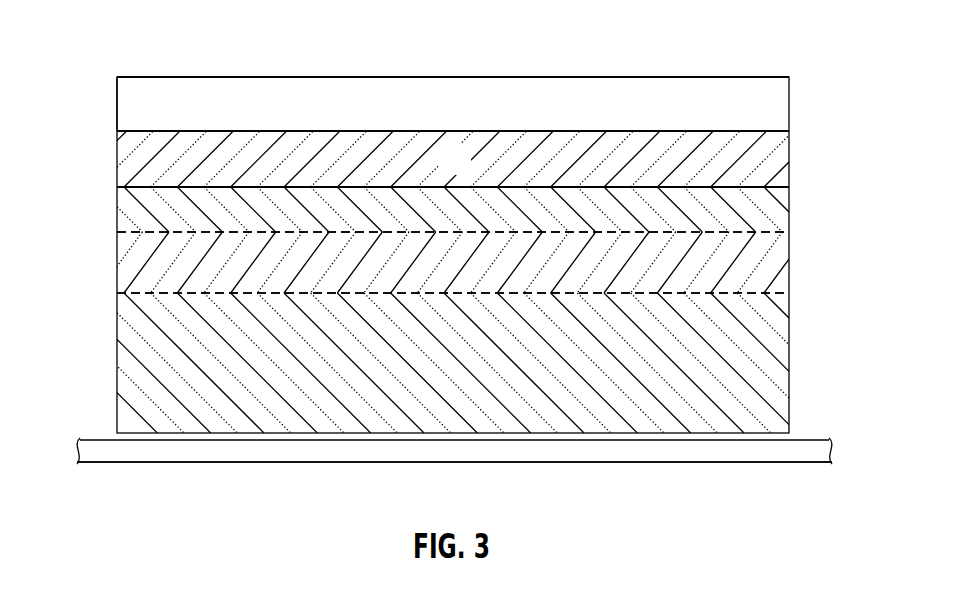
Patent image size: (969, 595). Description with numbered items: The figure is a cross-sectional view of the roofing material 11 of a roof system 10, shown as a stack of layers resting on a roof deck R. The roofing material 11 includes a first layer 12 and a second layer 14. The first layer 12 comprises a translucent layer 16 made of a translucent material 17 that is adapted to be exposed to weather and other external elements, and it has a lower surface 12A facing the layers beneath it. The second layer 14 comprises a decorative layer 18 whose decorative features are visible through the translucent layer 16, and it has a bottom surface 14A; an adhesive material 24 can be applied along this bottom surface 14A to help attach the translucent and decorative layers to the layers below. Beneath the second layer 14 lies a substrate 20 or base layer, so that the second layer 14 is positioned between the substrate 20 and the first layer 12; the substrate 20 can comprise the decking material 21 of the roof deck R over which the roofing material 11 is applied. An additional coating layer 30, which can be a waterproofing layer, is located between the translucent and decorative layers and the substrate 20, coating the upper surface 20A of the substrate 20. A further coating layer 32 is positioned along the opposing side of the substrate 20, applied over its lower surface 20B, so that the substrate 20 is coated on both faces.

The roof system 10 is at (138, 43).
The roofing material 11 is at (511, 70).
The first layer 12 is at (750, 97).
The lower surface of the first layer 12A is at (769, 125).
The second layer 14 is at (112, 165).
The bottom surface of the decorative layer 14A is at (235, 178).
The translucent layer 16 is at (467, 120).
The translucent material 17 is at (645, 90).
The decorative layer 18 is at (467, 172).
The substrate 20 is at (762, 278).
The upper surface of the substrate 20A is at (434, 226).
The lower surface of the substrate 20B is at (467, 302).
The decking material 21 is at (755, 463).
The adhesive material 24 is at (125, 190).
The coating layer 30 is at (772, 207).
The coating layer 32 is at (770, 358).
The roof deck R is at (713, 472).